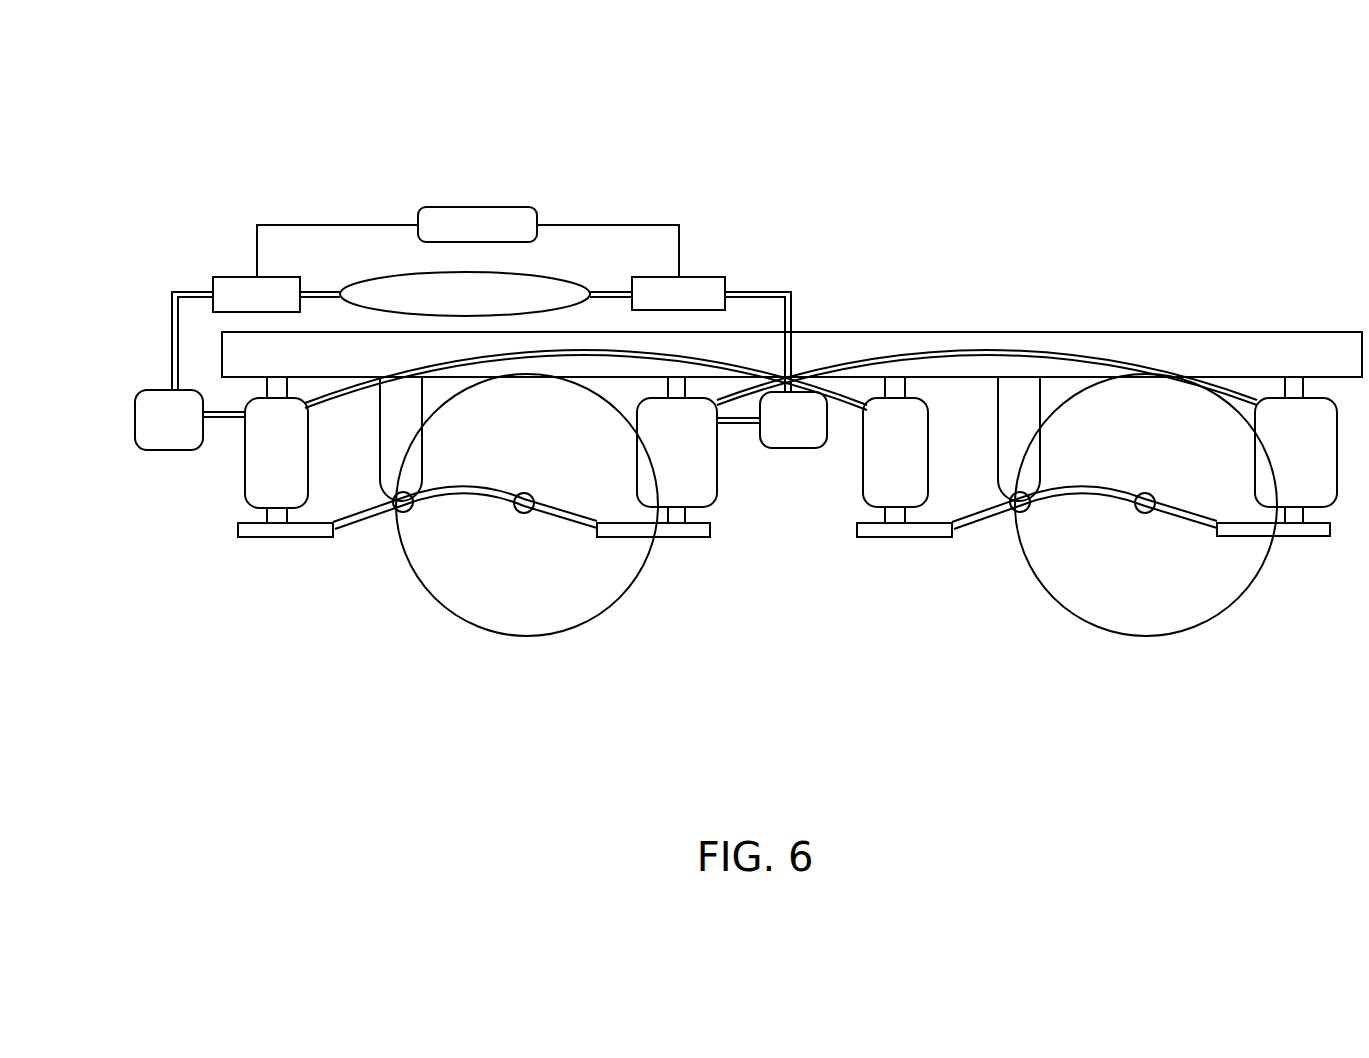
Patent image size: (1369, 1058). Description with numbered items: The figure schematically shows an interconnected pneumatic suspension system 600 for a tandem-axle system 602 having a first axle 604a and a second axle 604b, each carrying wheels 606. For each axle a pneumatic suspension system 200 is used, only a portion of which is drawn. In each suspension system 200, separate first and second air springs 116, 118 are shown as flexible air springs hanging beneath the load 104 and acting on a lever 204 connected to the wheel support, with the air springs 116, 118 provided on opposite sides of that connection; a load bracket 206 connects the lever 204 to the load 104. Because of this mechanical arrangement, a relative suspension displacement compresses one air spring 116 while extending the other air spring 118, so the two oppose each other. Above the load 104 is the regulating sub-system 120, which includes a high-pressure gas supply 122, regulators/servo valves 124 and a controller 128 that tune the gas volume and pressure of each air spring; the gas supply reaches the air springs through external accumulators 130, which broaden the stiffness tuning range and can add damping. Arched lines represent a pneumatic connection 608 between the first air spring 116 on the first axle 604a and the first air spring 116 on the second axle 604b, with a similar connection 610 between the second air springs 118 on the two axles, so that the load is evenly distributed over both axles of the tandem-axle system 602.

The load 104 is at (1142, 330).
The regulating sub-system 120 is at (335, 162).
The high-pressure gas supply 122 is at (527, 290).
The regulators/servo valves 124 is at (232, 277).
The controller 128 is at (472, 202).
The external accumulator 130 is at (135, 432).
The first air spring 116 is at (254, 452).
The second air spring 118 is at (655, 454).
The pneumatic suspension system 200 is at (167, 528).
The lever 204 is at (330, 533).
The load bracket 206 is at (387, 410).
The interconnected pneumatic suspension system 600 is at (893, 245).
The tandem-axle system 602 is at (985, 683).
The first axle 604a is at (518, 510).
The second axle 604b is at (1140, 512).
The wheel 606 is at (607, 605).
The pneumatic connection 608 is at (432, 363).
The second pneumatic line 610 is at (1005, 345).